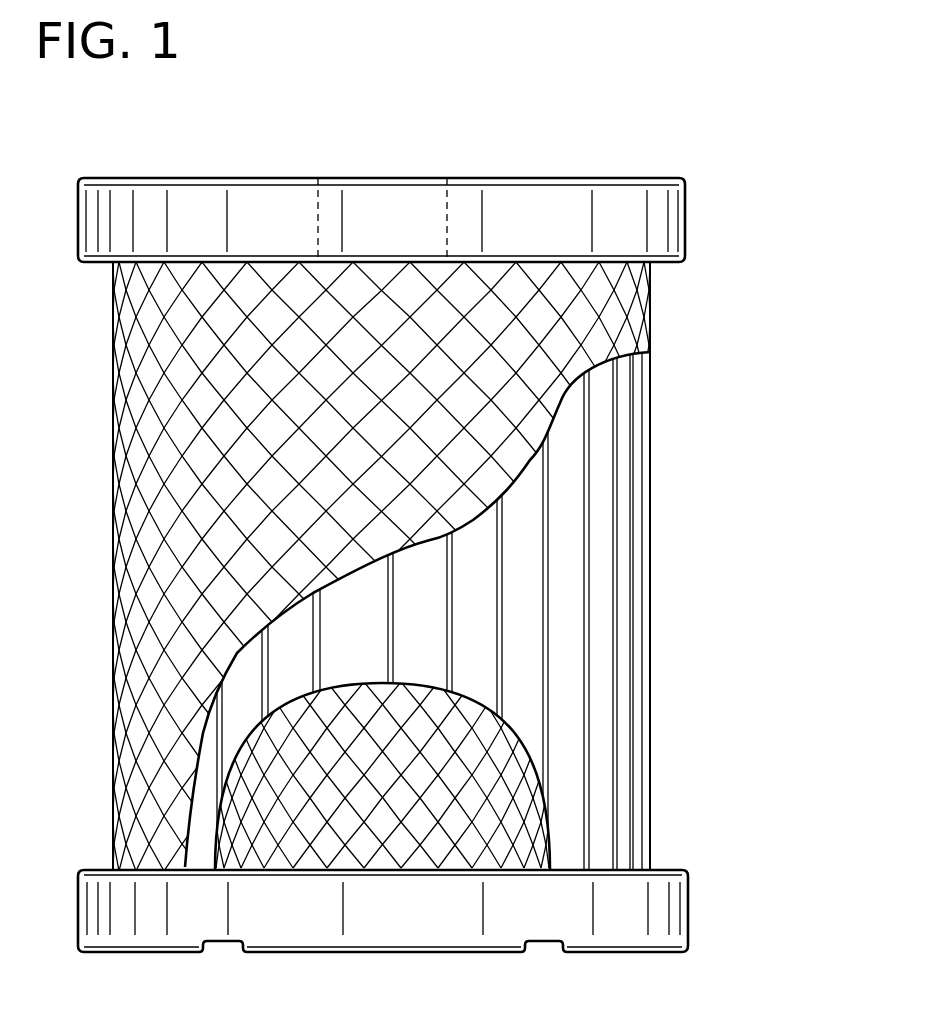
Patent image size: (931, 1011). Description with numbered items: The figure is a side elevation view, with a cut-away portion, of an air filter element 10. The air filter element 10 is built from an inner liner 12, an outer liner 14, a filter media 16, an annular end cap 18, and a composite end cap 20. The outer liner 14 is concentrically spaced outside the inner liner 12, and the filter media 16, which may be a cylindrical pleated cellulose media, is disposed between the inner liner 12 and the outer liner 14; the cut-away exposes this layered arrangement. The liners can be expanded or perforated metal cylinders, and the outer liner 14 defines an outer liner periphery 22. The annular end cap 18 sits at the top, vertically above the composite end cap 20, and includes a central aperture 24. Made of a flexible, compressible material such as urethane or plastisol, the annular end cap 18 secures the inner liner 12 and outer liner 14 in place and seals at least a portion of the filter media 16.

The air filter element 10 is at (722, 120).
The inner liner 12 is at (268, 823).
The outer liner 14 is at (182, 427).
The filter media 16 is at (573, 530).
The annular end cap 18 is at (655, 224).
The composite end cap 20 is at (656, 916).
The outer liner periphery 22 is at (113, 843).
The central aperture 24 is at (447, 208).